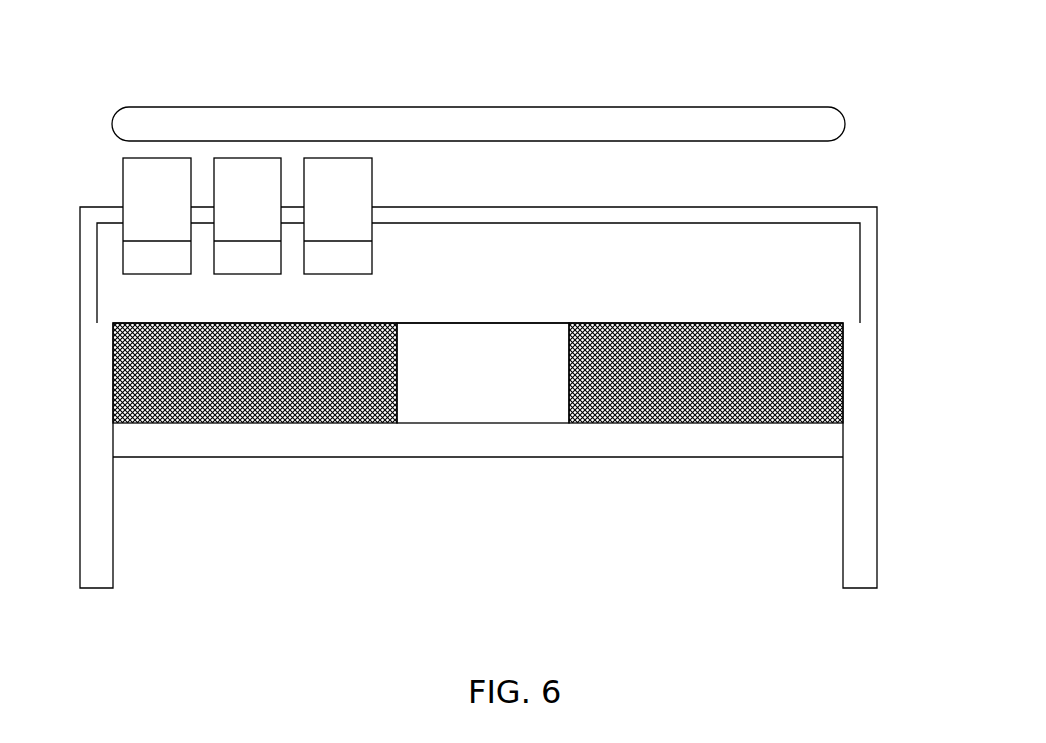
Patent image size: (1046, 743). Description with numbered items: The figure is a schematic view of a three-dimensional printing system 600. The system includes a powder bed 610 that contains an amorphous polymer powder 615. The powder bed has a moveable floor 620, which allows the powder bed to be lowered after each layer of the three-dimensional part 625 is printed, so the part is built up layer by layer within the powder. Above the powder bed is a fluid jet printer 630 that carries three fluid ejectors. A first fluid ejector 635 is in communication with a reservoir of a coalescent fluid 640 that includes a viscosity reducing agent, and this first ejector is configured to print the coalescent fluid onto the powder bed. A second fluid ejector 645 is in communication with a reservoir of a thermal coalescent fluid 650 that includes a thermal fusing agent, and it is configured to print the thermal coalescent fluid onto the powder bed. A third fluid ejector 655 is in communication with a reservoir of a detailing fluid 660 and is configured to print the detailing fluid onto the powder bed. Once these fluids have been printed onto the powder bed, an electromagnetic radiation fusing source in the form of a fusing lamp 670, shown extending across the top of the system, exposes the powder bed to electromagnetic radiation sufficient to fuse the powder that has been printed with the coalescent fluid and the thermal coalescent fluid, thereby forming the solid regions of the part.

The 3-dimensional printing system 600 is at (178, 50).
The powder bed 610 is at (501, 346).
The amorphous polymer powder 615 is at (717, 331).
The moveable floor 620 is at (599, 445).
The 3-dimensional part 625 is at (494, 340).
The fluid jet printer 630 is at (840, 217).
The first fluid ejector 635 is at (142, 259).
The coalescent fluid 640 is at (98, 216).
The second fluid ejector 645 is at (245, 262).
The thermal coalescent fluid 650 is at (266, 174).
The third fluid ejector 655 is at (350, 257).
The detailing fluid 660 is at (403, 216).
The fusing lamp 670 is at (566, 118).